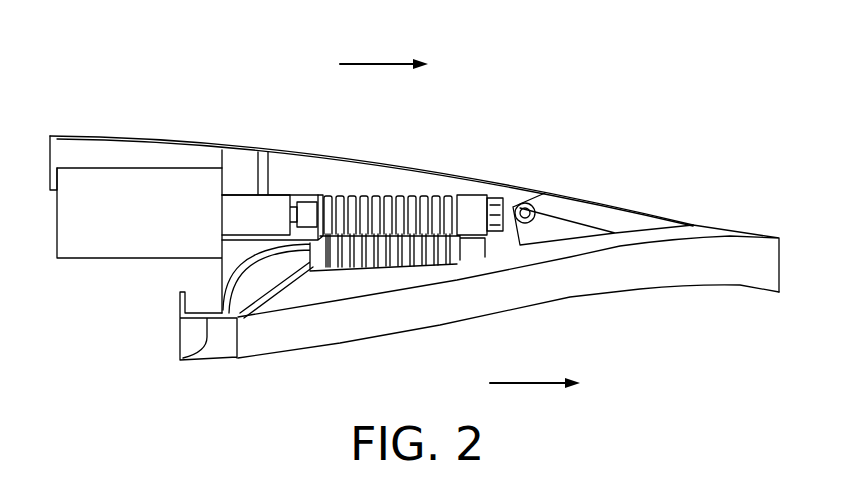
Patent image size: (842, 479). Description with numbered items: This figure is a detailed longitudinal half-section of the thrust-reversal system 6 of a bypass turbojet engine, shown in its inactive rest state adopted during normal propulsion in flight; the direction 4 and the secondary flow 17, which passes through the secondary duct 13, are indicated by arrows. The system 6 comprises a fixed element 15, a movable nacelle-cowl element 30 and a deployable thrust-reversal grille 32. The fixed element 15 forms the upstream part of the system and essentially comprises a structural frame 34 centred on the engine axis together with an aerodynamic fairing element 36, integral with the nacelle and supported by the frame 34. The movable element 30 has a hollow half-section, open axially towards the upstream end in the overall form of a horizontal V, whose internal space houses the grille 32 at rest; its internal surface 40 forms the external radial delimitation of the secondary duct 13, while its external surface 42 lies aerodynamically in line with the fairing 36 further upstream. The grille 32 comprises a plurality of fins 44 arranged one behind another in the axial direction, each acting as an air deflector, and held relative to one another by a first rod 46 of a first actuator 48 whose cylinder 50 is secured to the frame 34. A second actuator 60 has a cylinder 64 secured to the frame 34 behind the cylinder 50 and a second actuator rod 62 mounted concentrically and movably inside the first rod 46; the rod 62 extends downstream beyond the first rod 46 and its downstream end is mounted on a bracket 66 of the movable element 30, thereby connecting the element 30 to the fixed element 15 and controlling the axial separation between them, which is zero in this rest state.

The forward direction 4 is at (376, 62).
The thrust-reversal system 6 is at (589, 111).
The secondary duct 13 is at (618, 334).
The fixed element 15 is at (153, 131).
The secondary flow 17 is at (527, 381).
The movable nacelle-cowl element 30 is at (668, 210).
The deployable thrust-reversal grille 32 is at (358, 189).
The structural frame 34 is at (180, 361).
The aerodynamic fairing element 36 is at (90, 136).
The internal surface 40 is at (643, 291).
The external surface 42 is at (300, 148).
The fins 44 is at (400, 195).
The first rod 46 is at (295, 200).
The first actuator 48 is at (242, 207).
The cylinder 50 is at (272, 225).
The second actuator 60 is at (92, 244).
The second actuator rod 62 is at (508, 200).
The cylinder 64 is at (83, 183).
The bracket 66 is at (556, 218).